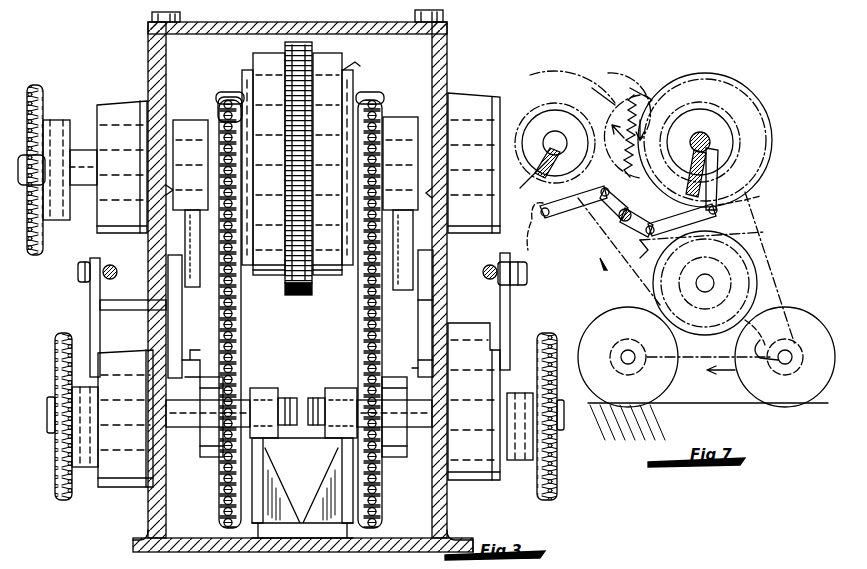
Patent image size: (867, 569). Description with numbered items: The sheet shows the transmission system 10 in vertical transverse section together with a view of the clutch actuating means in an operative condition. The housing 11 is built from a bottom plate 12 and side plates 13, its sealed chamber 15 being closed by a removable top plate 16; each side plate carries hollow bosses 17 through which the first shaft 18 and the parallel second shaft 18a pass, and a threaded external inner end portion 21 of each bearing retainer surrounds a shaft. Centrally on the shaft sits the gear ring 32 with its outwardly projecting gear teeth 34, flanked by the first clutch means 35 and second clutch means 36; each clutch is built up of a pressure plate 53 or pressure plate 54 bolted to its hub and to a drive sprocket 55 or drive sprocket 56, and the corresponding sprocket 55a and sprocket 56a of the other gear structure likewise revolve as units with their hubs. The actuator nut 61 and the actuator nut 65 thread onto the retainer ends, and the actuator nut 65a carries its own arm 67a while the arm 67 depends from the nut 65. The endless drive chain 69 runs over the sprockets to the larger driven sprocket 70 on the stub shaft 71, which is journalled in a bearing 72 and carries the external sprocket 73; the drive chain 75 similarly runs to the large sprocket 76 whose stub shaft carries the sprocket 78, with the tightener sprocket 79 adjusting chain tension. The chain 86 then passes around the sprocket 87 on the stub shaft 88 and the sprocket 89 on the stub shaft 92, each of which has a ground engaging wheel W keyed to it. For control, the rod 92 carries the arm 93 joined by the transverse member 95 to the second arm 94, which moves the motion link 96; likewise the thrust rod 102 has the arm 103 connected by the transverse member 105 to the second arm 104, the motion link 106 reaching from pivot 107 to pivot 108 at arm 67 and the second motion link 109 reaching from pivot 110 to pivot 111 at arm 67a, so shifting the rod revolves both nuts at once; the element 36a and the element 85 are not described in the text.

In FIG. 3, the transmission system 10 is at (503, 68).
In FIG. 3, the housing 11 is at (152, 500).
In FIG. 3, the bottom plate 12 is at (142, 535).
In FIG. 3, the side plates 13 is at (148, 70).
In FIG. 3, the chamber 15 is at (440, 68).
In FIG. 3, the top plate 16 is at (447, 27).
In FIG. 3, the bosses 17 is at (478, 100).
In FIG. 3, the first shaft 18 is at (82, 157).
In FIG. 7, the first shaft 18 is at (710, 142).
In FIG. 7, the second shaft 18a is at (532, 172).
In FIG. 3, the external inner end portion 21 is at (166, 188).
In FIG. 3, the gear ring 32 is at (314, 45).
In FIG. 3, the gear teeth 34 is at (290, 42).
In FIG. 3, the first clutch means 35 is at (372, 60).
In FIG. 3, the second clutch means 36 is at (236, 62).
In FIG. 7, the arc path 36a is at (578, 66).
In FIG. 3, the pressure plate 53 is at (357, 84).
In FIG. 3, the pressure plate 54 is at (242, 72).
In FIG. 3, the drive sprocket 55 is at (372, 96).
In FIG. 7, the sprocket 55a is at (782, 566).
In FIG. 3, the drive sprocket 56 is at (228, 96).
In FIG. 7, the drive sprocket 56 is at (762, 80).
In FIG. 7, the sprocket 56a is at (615, 95).
In FIG. 3, the actuator nut 61 is at (404, 117).
In FIG. 3, the actuator nut 65 is at (190, 120).
In FIG. 7, the actuator nut 65 is at (700, 109).
In FIG. 7, the actuator nut 65a is at (555, 111).
In FIG. 3, the arm 67 is at (188, 240).
In FIG. 7, the arm 67 is at (745, 196).
In FIG. 3, the arm 67a is at (518, 243).
In FIG. 3, the drive chain 69 is at (358, 322).
In FIG. 3, the driven sprocket 70 is at (396, 460).
In FIG. 3, the stub shaft 71 is at (405, 448).
In FIG. 7, the stub shaft 71 is at (705, 283).
In FIG. 3, the bearing 72 is at (258, 390).
In FIG. 3, the sprocket 73 is at (556, 464).
In FIG. 3, the drive chain 75 is at (243, 322).
In FIG. 7, the drive chain 75 is at (760, 213).
In FIG. 3, the sprocket 76 is at (212, 460).
In FIG. 7, the sprocket 76 is at (752, 238).
In FIG. 3, the sprocket 78 is at (55, 455).
In FIG. 7, the sprocket 78 is at (750, 286).
In FIG. 7, the tightener sprocket 79 is at (670, 75).
In FIG. 7, the link 85 is at (768, 318).
In FIG. 7, the chain 86 is at (764, 342).
In FIG. 7, the sprocket 87 is at (790, 364).
In FIG. 7, the stub shaft 88 is at (676, 355).
In FIG. 7, the sprocket 89 is at (624, 364).
In FIG. 3, the rod 92 is at (483, 280).
In FIG. 3, the arm 93 is at (510, 313).
In FIG. 3, the second arm 94 is at (418, 318).
In FIG. 3, the transverse member 95 is at (412, 365).
In FIG. 3, the motion link 96 is at (418, 300).
In FIG. 3, the thrust rod 102 is at (117, 279).
In FIG. 3, the arm 103 is at (90, 300).
In FIG. 3, the second arm 104 is at (166, 305).
In FIG. 7, the second arm 104 is at (648, 236).
In FIG. 3, the transverse member 105 is at (199, 356).
In FIG. 7, the transverse member 105 is at (618, 220).
In FIG. 7, the motion link 106 is at (682, 209).
In FIG. 7, the pivot 107 is at (638, 255).
In FIG. 7, the pivot 108 is at (765, 200).
In FIG. 3, the second motion link 109 is at (182, 298).
In FIG. 7, the second motion link 109 is at (593, 251).
In FIG. 7, the pivot 110 is at (605, 188).
In FIG. 7, the pivot 111 is at (548, 217).
In FIG. 7, the ground engaging wheels W is at (750, 376).